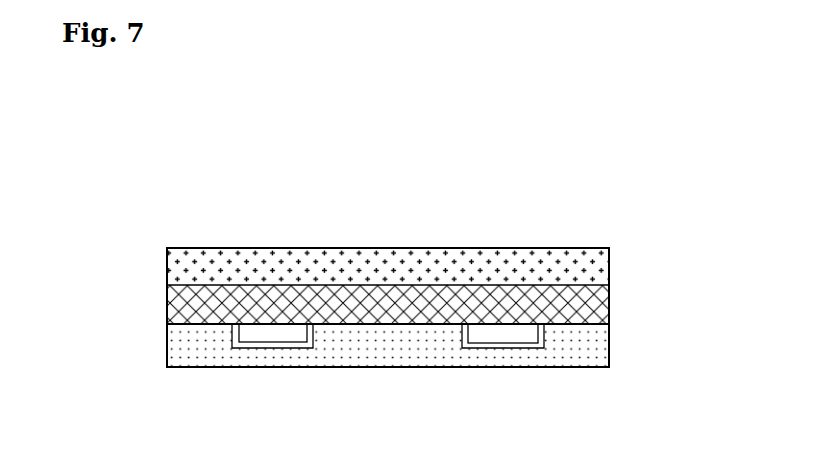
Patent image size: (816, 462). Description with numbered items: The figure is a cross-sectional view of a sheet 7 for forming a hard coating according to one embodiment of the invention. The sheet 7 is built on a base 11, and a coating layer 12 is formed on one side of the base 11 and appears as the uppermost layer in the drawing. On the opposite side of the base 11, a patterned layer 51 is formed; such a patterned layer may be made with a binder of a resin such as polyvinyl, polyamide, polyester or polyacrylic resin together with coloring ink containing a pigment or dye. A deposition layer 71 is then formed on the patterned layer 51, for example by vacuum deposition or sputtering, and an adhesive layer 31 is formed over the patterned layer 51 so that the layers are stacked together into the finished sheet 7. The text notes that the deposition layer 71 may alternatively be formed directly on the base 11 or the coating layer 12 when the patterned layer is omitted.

The sheet for forming a hard coating 7 is at (418, 217).
The coating layer 12 is at (609, 267).
The base 11 is at (609, 303).
The adhesive layer 31 is at (609, 345).
The deposition layer 71 is at (167, 325).
The patterned layer 51 is at (524, 352).